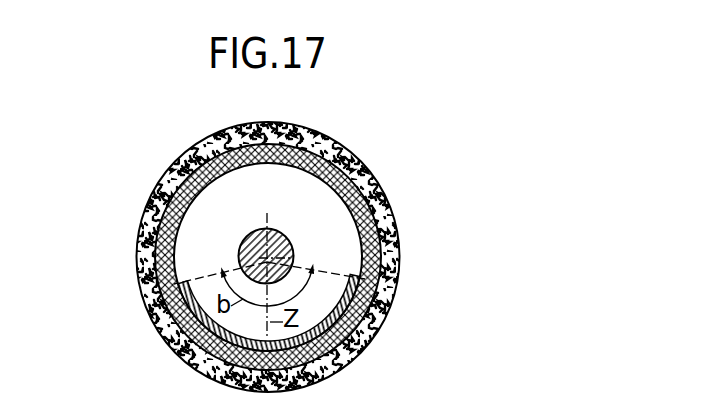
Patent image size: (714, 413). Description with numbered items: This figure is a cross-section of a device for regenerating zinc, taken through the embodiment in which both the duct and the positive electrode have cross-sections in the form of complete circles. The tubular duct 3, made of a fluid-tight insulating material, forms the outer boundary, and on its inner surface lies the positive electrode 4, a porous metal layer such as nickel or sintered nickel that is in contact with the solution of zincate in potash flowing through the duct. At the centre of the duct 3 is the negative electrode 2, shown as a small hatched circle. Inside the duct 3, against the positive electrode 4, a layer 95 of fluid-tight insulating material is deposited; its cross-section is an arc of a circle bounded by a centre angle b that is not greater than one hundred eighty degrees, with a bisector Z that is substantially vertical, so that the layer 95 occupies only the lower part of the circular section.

The tubular duct 3 is at (167, 184).
The positive electrode 4 is at (155, 219).
The negative electrode 2 is at (250, 242).
The layer of fluid-tight insulating material 95 is at (181, 289).